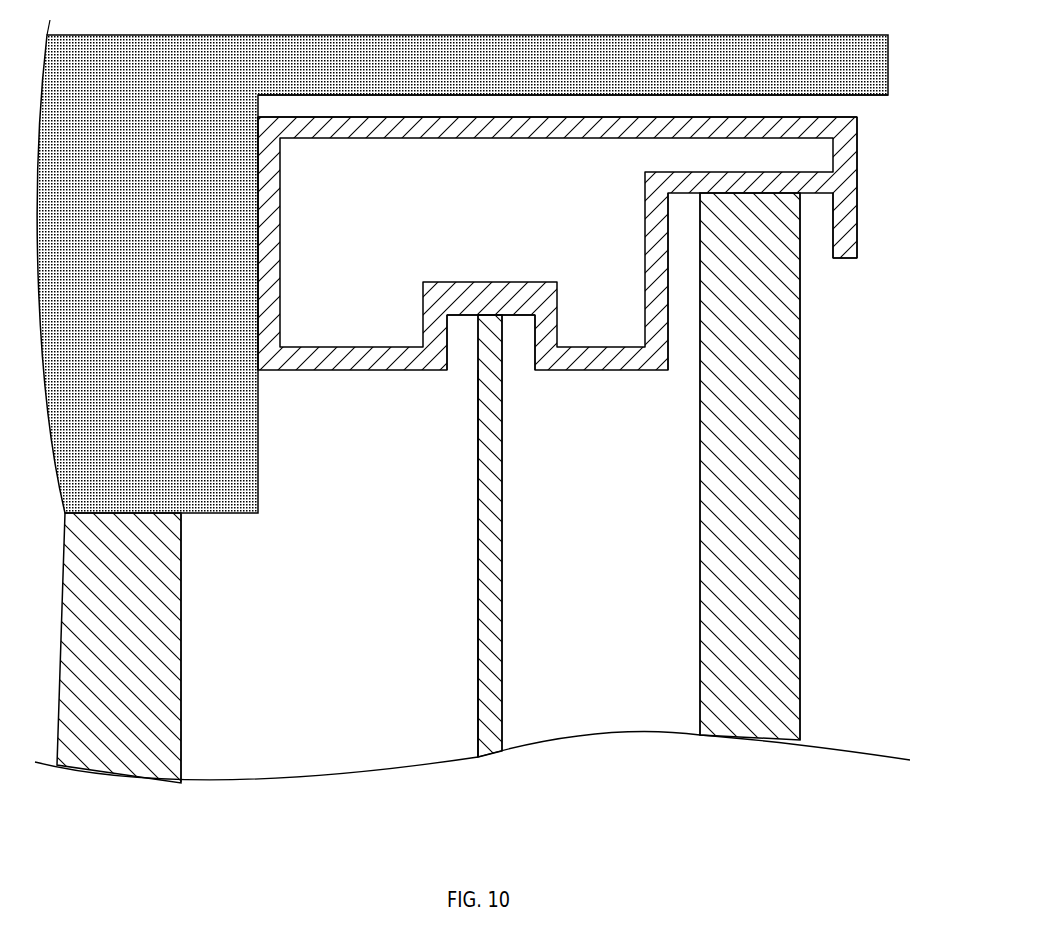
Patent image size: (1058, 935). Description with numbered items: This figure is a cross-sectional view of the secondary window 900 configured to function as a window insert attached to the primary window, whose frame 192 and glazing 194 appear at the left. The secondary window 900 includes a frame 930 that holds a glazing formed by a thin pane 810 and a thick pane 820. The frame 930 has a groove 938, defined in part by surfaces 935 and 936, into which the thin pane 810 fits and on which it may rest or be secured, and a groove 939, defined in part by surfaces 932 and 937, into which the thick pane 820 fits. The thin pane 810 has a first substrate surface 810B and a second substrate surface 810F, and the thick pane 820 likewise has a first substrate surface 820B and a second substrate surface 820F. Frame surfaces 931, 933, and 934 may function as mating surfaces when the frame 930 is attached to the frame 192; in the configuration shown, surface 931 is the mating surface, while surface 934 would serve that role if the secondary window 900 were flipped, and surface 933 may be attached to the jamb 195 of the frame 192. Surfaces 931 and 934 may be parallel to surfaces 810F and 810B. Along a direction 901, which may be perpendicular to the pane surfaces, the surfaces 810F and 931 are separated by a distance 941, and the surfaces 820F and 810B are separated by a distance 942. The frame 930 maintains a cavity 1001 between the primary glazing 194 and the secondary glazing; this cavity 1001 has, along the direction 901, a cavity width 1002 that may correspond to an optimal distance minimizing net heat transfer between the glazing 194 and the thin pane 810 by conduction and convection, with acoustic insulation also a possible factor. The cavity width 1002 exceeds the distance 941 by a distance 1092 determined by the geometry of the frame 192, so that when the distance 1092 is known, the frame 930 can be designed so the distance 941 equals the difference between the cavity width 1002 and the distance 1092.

The frame 192 is at (150, 285).
The glazing 194 is at (172, 663).
The jamb 195 is at (873, 106).
The thin pane 810 is at (490, 757).
The second substrate surface 810F is at (467, 602).
The first substrate surface 810B is at (513, 602).
The thick pane 820 is at (765, 505).
The second substrate surface 820F is at (690, 647).
The first substrate surface 820B is at (811, 658).
The secondary window 900 is at (878, 442).
The direction 901 is at (516, 819).
The frame 930 is at (532, 306).
The frame surface 931 is at (248, 248).
The frame surface 932 is at (678, 337).
The frame surface 933 is at (451, 107).
The frame surface 934 is at (870, 227).
The frame surface 935 is at (458, 348).
The frame surface 936 is at (520, 335).
The frame surface 937 is at (825, 225).
The groove 938 is at (522, 365).
The groove 939 is at (820, 272).
The distance 941 is at (468, 492).
The distance 942 is at (690, 492).
The cavity 1001 is at (355, 685).
The cavity width 1002 is at (468, 728).
The distance 1092 is at (257, 608).